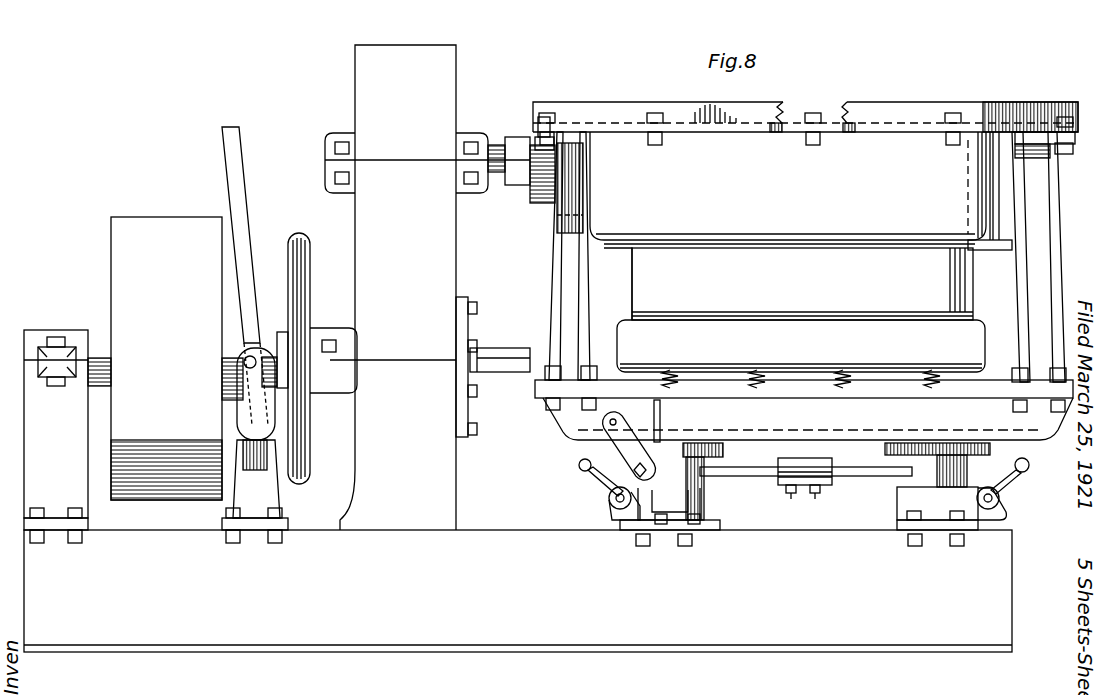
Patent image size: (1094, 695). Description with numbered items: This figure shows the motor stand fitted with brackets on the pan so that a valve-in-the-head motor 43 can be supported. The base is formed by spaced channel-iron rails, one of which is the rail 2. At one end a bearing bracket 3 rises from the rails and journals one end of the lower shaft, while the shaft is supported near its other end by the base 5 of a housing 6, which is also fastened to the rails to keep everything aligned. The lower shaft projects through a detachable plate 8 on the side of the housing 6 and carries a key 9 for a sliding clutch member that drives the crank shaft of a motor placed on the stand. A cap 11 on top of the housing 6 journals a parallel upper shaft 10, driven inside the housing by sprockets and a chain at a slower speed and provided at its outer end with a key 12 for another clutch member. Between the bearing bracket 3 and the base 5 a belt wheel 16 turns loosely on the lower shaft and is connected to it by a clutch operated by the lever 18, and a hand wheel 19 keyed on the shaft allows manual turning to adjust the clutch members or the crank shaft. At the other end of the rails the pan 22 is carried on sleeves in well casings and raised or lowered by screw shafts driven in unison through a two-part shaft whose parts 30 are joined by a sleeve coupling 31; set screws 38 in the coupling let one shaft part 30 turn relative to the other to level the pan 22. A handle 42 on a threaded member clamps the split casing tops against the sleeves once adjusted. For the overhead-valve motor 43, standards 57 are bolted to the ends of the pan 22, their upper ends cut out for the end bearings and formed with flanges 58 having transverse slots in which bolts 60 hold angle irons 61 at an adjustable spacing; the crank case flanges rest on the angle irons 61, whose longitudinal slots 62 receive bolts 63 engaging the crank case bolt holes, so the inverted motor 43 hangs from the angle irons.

The rail 2 is at (518, 591).
The bearing bracket 3 is at (30, 422).
The base 5 is at (398, 413).
The housing 6 is at (383, 315).
The detachable plate 8 is at (462, 434).
The key 9 is at (498, 373).
The shaft 10 is at (497, 146).
The cap 11 is at (427, 119).
The key 12 is at (497, 173).
The belt wheel 16 is at (188, 358).
The lever 18 is at (238, 200).
The hand wheel 19 is at (302, 345).
The pan 22 is at (575, 426).
The shaft part 30 is at (738, 477).
The sleeve coupling 31 is at (802, 458).
The set screws 38 is at (794, 496).
The handle 42 is at (585, 472).
The motor 43 is at (801, 260).
The standards 57 is at (558, 262).
The flanges 58 is at (573, 137).
The bolts 60 is at (534, 143).
The angle irons 61 is at (995, 110).
The slots 62 is at (833, 127).
The bolts 63 is at (657, 145).